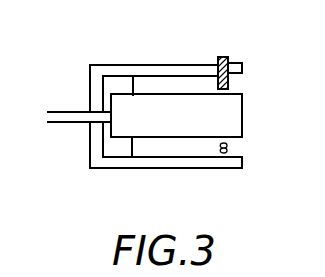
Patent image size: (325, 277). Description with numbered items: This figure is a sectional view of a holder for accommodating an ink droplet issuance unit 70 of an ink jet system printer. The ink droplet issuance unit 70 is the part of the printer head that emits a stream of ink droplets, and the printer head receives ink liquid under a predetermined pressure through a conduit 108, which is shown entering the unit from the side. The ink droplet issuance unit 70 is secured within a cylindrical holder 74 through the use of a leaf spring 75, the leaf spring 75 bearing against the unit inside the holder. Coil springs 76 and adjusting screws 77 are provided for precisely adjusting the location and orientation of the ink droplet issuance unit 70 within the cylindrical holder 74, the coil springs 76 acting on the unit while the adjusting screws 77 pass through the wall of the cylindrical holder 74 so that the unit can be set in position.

The ink droplet issuance unit 70 is at (230, 117).
The cylindrical holder 74 is at (157, 68).
The leaf spring 75 is at (132, 145).
The coil spring 76 is at (228, 149).
The adjusting screw 77 is at (221, 57).
The conduit 108 is at (65, 115).